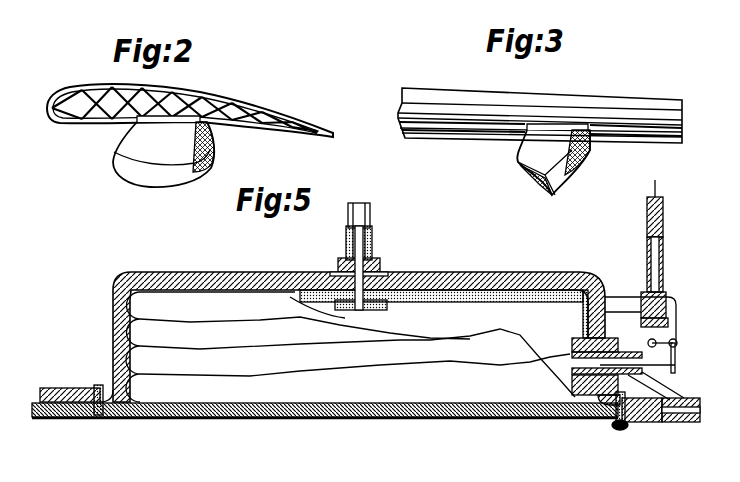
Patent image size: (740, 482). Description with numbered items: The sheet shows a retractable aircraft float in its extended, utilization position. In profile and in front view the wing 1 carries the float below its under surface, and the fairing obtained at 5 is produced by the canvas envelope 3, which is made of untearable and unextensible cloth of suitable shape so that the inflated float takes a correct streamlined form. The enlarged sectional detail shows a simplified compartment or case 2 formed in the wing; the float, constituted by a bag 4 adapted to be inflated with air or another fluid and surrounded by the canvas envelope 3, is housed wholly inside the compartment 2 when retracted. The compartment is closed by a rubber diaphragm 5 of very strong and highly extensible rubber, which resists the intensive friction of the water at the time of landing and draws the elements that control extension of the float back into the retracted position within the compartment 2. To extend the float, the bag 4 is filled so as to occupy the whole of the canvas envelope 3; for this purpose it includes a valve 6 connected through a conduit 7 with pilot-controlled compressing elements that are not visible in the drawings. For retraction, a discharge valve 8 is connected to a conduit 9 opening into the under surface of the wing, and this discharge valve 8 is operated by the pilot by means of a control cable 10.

In FIG. 2, the wing 1 is at (212, 105).
In FIG. 3, the wing 1 is at (542, 99).
In FIG. 5, the compartment 2 is at (190, 278).
In FIG. 5, the canvas envelope 3 is at (338, 414).
In FIG. 5, the bag 4 is at (443, 302).
In FIG. 2, the rubber diaphragm 5 is at (153, 176).
In FIG. 3, the rubber diaphragm 5 is at (573, 152).
In FIG. 5, the valve 6 is at (365, 265).
In FIG. 5, the conduit 7 is at (348, 212).
In FIG. 5, the discharge valve 8 is at (595, 372).
In FIG. 5, the conduit 9 is at (633, 425).
In FIG. 5, the control cable 10 is at (655, 222).